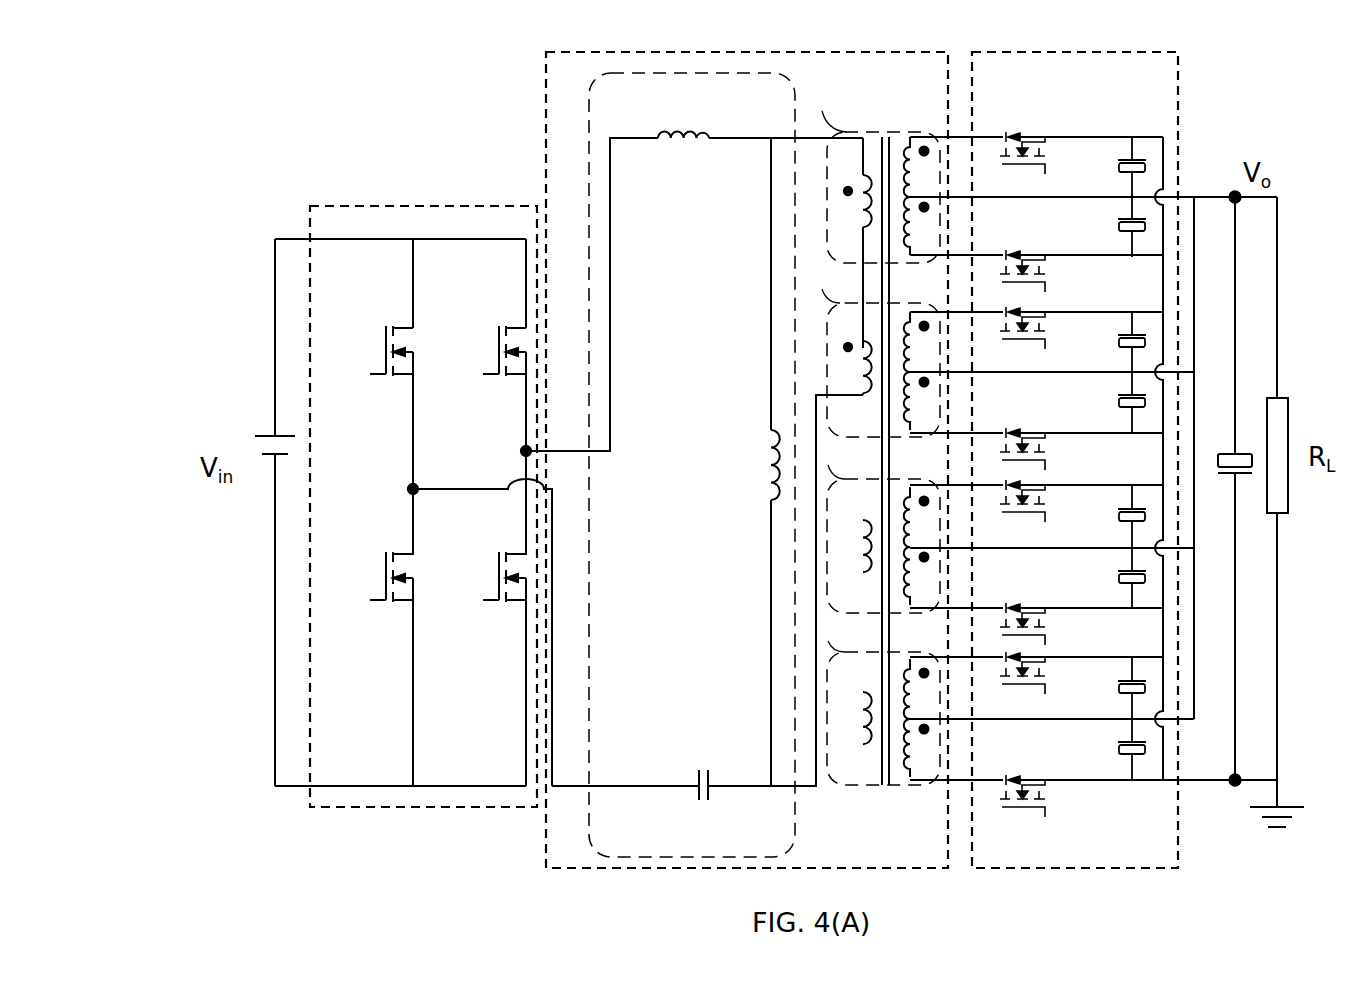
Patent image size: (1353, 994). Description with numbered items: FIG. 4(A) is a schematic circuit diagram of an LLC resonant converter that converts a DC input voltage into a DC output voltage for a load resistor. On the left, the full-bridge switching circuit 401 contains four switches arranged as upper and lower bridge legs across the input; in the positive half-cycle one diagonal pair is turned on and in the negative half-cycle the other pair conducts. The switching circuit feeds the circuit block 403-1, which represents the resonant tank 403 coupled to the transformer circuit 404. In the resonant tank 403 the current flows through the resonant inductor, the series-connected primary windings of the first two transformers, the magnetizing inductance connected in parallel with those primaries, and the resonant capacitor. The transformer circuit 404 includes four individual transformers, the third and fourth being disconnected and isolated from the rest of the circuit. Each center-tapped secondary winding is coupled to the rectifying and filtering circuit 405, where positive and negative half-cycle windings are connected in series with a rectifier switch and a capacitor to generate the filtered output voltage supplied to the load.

The full-bridge switching circuit 401 is at (425, 205).
The circuit block 403-1 is at (658, 52).
The resonant tank 403 is at (587, 127).
The transformer circuit 404 is at (883, 118).
The rectifying and filtering circuit 405 is at (1181, 86).